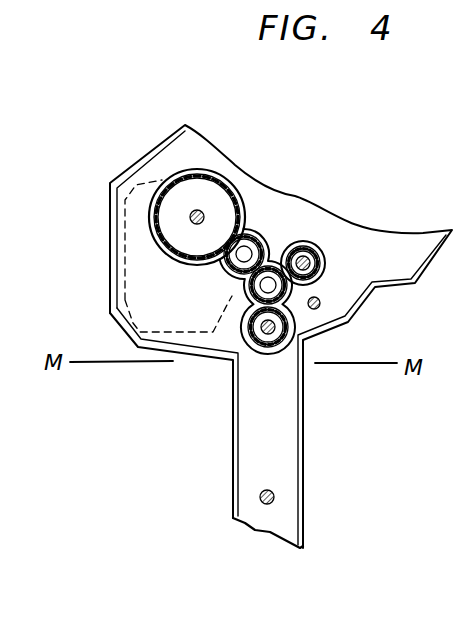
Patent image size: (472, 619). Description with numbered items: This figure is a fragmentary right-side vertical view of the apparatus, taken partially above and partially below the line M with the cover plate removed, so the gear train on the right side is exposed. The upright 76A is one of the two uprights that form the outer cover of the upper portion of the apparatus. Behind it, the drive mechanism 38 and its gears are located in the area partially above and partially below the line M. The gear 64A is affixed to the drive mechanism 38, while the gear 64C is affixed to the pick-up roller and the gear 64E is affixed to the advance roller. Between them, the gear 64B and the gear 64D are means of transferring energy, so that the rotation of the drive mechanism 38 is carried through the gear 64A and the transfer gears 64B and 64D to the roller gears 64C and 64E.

The upright 76A is at (277, 199).
The drive mechanism 38 is at (140, 291).
The gear 64A is at (170, 232).
The gear 64B is at (253, 245).
The gear 64C is at (312, 264).
The gear 64D is at (256, 290).
The gear 64E is at (284, 332).